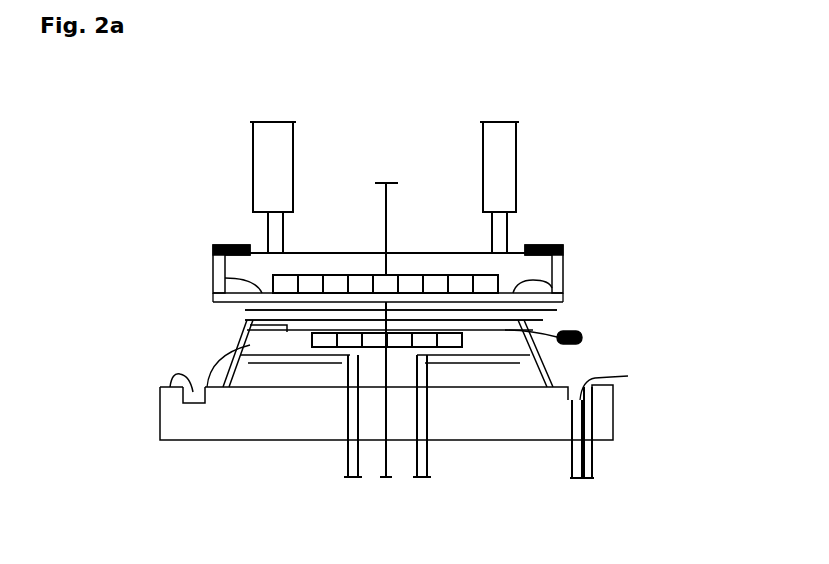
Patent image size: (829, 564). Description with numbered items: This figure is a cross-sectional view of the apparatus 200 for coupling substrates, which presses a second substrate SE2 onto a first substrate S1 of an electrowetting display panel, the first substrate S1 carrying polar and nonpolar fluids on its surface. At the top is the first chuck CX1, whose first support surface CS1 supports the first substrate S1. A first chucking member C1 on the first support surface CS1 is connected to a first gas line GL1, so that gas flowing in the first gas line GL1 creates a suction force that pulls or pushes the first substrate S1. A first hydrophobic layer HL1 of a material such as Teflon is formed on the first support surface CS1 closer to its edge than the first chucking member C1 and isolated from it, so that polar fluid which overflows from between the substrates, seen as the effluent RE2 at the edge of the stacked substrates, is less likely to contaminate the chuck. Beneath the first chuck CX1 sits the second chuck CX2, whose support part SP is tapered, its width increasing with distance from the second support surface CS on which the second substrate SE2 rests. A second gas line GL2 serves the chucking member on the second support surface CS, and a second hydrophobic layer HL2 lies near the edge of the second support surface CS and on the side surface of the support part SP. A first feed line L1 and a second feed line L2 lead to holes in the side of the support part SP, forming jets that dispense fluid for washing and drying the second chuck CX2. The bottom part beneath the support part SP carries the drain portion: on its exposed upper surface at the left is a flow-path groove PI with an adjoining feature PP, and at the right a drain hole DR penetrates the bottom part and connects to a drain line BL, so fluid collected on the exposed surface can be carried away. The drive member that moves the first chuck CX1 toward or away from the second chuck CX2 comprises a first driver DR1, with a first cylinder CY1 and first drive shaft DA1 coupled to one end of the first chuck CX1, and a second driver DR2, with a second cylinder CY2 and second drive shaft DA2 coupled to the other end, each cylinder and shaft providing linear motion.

The pixel structure 200 is at (580, 90).
The first gas line GL1 is at (380, 182).
The second gas line GL2 is at (383, 478).
The second cylinder CY2 is at (260, 185).
The first cylinder CY1 is at (511, 185).
The second driver DR2 is at (160, 172).
The first driver DR1 is at (613, 172).
The second drive shaft DA2 is at (268, 223).
The first drive shaft DA1 is at (507, 222).
The first hydrophobic layer HL1 is at (213, 252).
The second hydrophobic layer HL2 is at (245, 327).
The first support surface CS1 is at (225, 279).
The capacitor structure CS is at (240, 312).
The first complex layer CX1 is at (614, 250).
The second complex layer CX2 is at (110, 313).
The first chucking member C1 is at (563, 293).
The first substrate S1 is at (557, 310).
The second sensing element SE2 is at (540, 325).
The second reference electrode RE2 is at (555, 345).
The drain DR is at (612, 385).
The support part SP is at (245, 345).
The pixel pad PP is at (172, 405).
The pixel insulator PI is at (210, 397).
The first feed line L1 is at (345, 470).
The second feed line L2 is at (413, 475).
The bit line BL is at (570, 465).